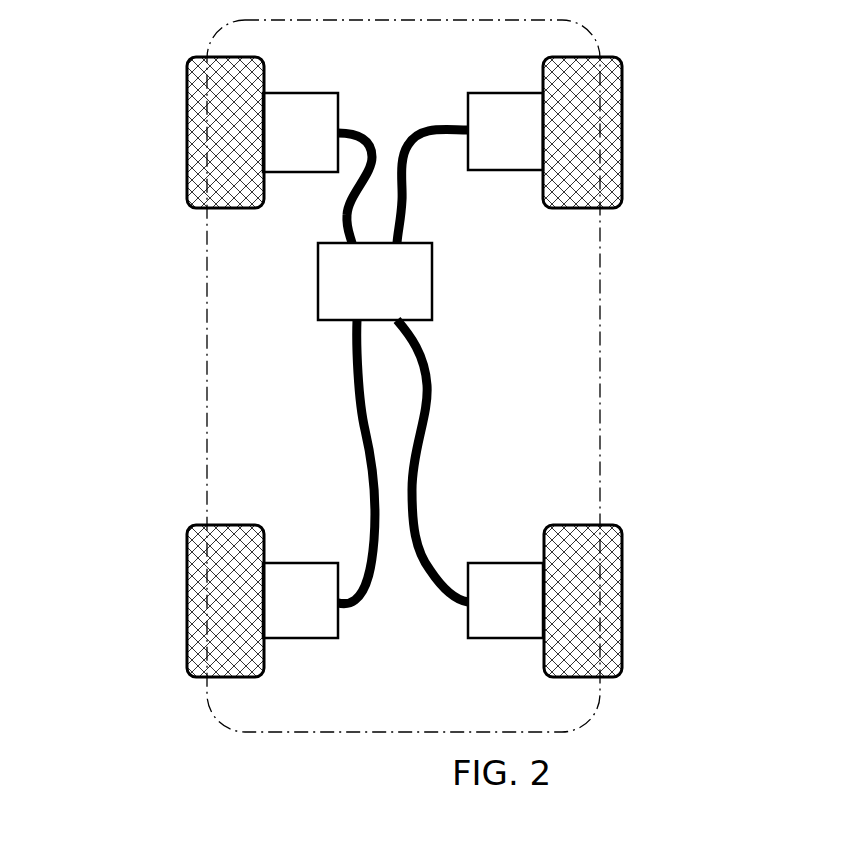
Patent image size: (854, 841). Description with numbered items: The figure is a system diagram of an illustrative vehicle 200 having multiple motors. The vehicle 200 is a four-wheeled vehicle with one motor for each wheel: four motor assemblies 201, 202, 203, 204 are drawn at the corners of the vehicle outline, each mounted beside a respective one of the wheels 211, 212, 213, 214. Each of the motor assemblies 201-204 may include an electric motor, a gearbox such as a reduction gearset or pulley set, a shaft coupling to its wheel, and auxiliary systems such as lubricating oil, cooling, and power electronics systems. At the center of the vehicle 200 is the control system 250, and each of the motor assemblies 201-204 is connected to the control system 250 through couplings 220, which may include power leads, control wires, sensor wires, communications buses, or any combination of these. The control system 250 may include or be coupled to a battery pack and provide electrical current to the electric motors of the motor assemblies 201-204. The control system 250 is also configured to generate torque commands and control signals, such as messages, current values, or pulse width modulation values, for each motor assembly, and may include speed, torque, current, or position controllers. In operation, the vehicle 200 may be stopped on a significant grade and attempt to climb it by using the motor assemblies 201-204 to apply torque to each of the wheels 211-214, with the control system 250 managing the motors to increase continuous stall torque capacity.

The vehicle 200 is at (373, 67).
The motor assembly 201 is at (279, 145).
The motor assembly 202 is at (484, 144).
The motor assembly 203 is at (279, 612).
The motor assembly 204 is at (484, 612).
The wheel 211 is at (187, 136).
The wheel 212 is at (622, 132).
The wheel 213 is at (187, 623).
The wheel 214 is at (622, 600).
The couplings 220 is at (451, 385).
The control system 250 is at (354, 294).